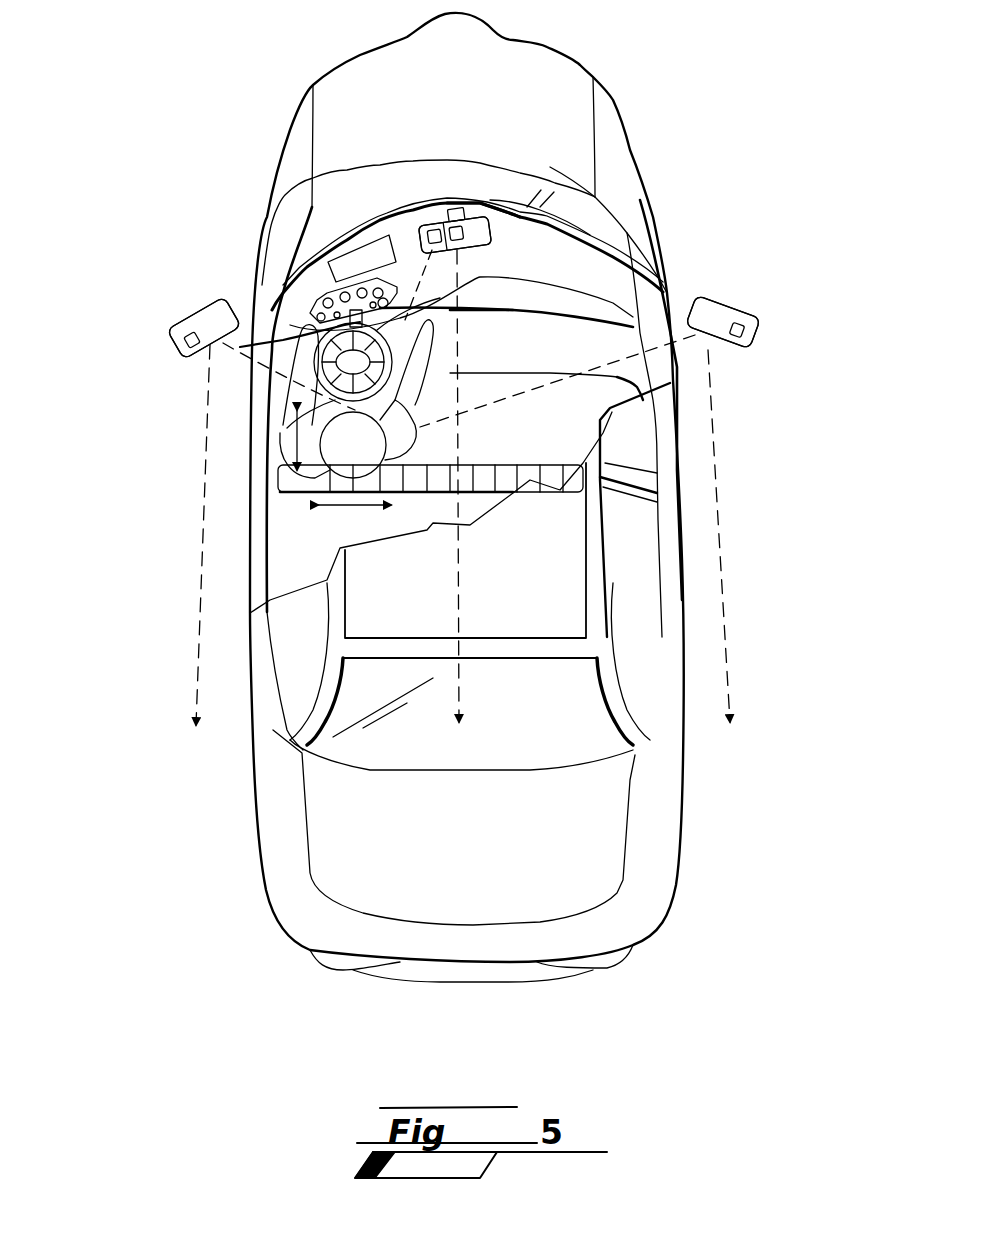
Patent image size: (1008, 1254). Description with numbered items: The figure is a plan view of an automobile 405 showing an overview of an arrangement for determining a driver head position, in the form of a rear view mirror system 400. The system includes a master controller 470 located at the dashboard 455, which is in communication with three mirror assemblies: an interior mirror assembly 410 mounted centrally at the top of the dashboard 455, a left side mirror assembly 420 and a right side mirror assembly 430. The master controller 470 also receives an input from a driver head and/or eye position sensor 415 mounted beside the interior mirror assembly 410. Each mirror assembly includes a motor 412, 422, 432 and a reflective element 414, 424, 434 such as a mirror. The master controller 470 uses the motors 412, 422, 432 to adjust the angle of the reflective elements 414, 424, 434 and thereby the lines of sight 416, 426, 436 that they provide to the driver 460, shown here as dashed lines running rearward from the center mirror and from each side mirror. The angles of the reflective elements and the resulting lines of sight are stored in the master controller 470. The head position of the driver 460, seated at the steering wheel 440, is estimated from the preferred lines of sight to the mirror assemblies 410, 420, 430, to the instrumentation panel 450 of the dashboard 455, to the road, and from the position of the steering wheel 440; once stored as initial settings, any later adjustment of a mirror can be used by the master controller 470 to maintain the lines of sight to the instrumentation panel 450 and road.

The rear view mirror system 400 is at (505, 210).
The automobile 405 is at (360, 52).
The mirror assembly 410 is at (420, 224).
The motor 412 is at (499, 213).
The reflective element 414 is at (473, 250).
The driver head and/or eye position sensor 415 is at (440, 212).
The line of sight 416 is at (460, 692).
The mirror assembly 420 is at (207, 310).
The motor 422 is at (180, 320).
The reflective element 424 is at (192, 348).
The line of sight 426 is at (196, 683).
The mirror assembly 430 is at (700, 300).
The motor 432 is at (736, 322).
The reflective element 434 is at (728, 348).
The line of sight 436 is at (725, 610).
The steering wheel 440 is at (345, 337).
The instrumentation panel 450 is at (310, 298).
The dashboard 455 is at (545, 303).
The driver 460 is at (313, 460).
The master controller 470 is at (360, 257).